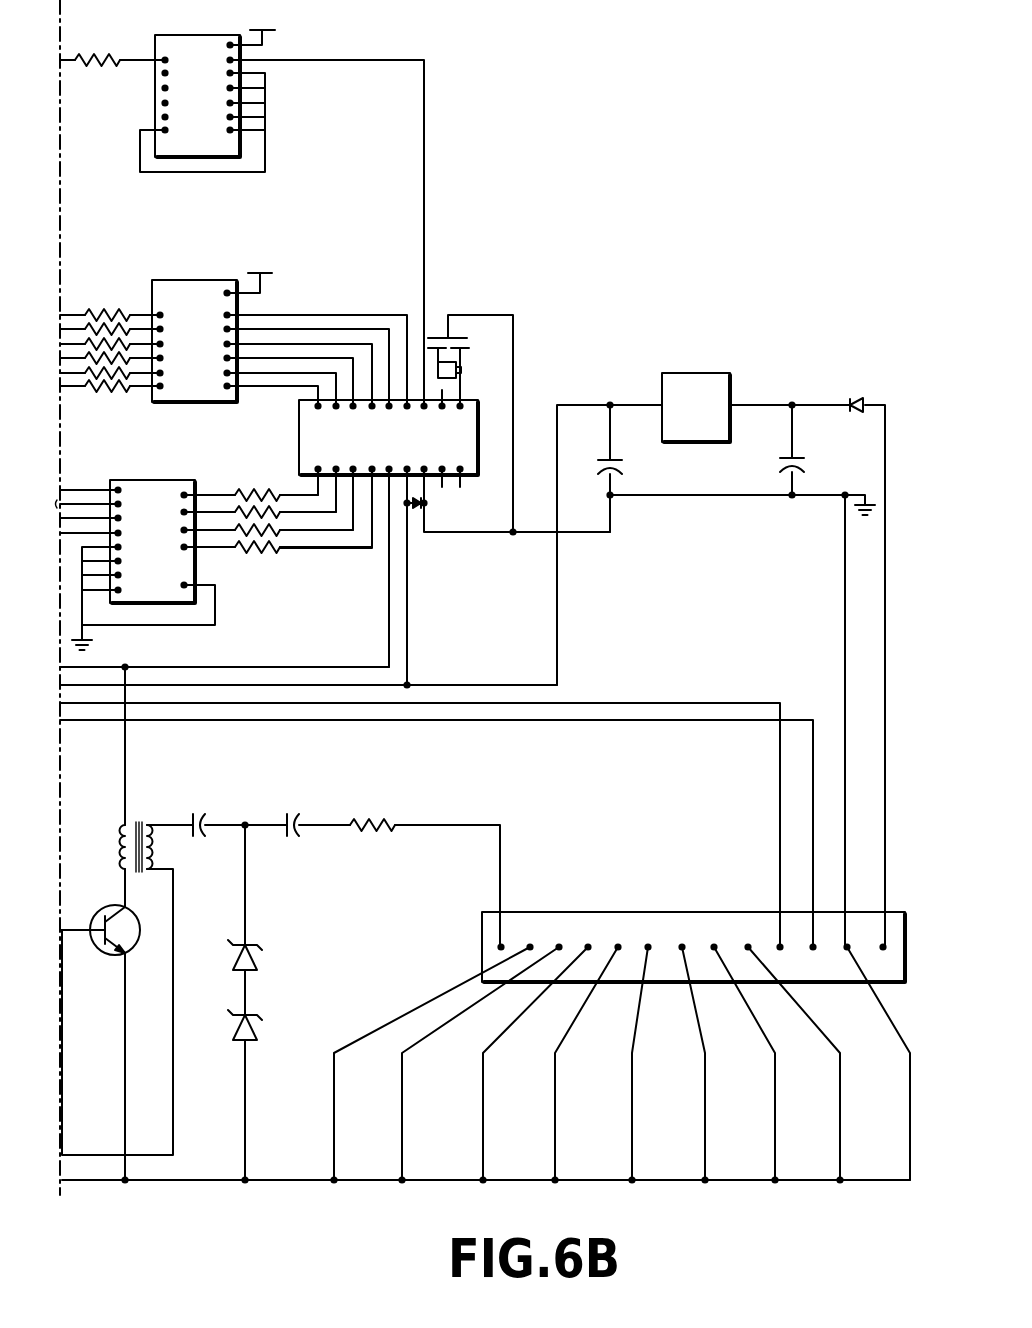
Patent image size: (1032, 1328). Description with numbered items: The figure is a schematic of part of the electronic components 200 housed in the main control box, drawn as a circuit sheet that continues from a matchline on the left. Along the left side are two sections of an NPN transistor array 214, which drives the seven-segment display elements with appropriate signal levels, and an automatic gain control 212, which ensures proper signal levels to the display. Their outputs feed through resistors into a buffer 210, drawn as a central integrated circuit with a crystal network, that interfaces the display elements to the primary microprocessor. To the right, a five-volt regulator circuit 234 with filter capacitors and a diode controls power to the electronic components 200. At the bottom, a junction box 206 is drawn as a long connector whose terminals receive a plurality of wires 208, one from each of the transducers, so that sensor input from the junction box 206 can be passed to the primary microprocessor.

The electronic components 200 is at (703, 93).
The NPN transistor array 214 is at (190, 43).
The buffer 210 is at (458, 416).
The automatic gain control 212 is at (135, 495).
The 5 V regulator circuit 234 is at (712, 380).
The junction box 206 is at (620, 920).
The wires 208 is at (910, 1147).